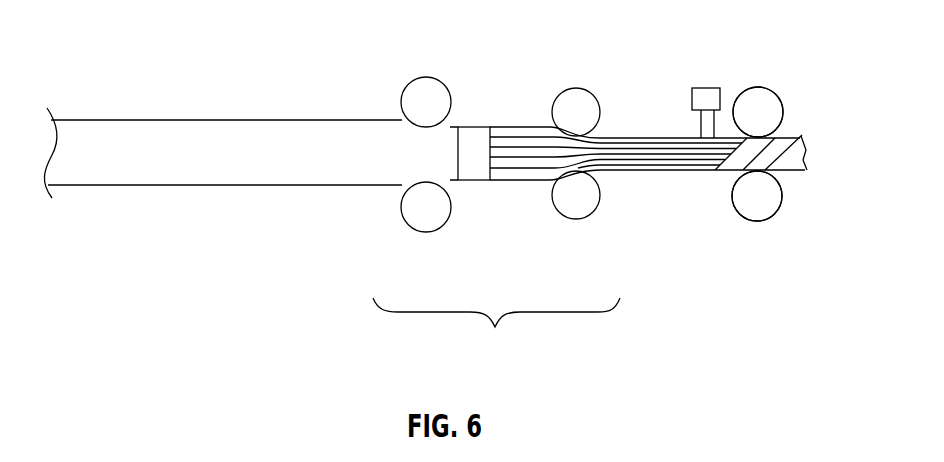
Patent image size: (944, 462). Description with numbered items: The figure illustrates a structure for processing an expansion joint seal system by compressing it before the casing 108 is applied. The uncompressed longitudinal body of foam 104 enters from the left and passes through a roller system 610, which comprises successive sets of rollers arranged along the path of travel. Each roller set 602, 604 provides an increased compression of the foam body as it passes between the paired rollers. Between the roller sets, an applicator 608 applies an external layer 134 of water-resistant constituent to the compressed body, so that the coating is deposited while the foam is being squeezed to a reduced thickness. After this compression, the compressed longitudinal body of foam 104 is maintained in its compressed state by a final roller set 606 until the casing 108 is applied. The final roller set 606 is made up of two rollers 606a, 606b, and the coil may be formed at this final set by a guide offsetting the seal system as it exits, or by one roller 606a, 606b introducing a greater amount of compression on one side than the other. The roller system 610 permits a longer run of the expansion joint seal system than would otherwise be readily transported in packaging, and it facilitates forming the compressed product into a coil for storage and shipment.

The longitudinal body of foam 104 is at (632, 140).
The casing 108 is at (778, 150).
The external layer 134 is at (690, 172).
The roller set 602 is at (418, 215).
The roller set 604 is at (578, 213).
The final roller set 606 is at (780, 107).
The roller of the final set of rollers 606a is at (753, 205).
The roller of the final set of rollers 606b is at (765, 103).
The applicator 608 is at (472, 182).
The roller system 610 is at (496, 330).